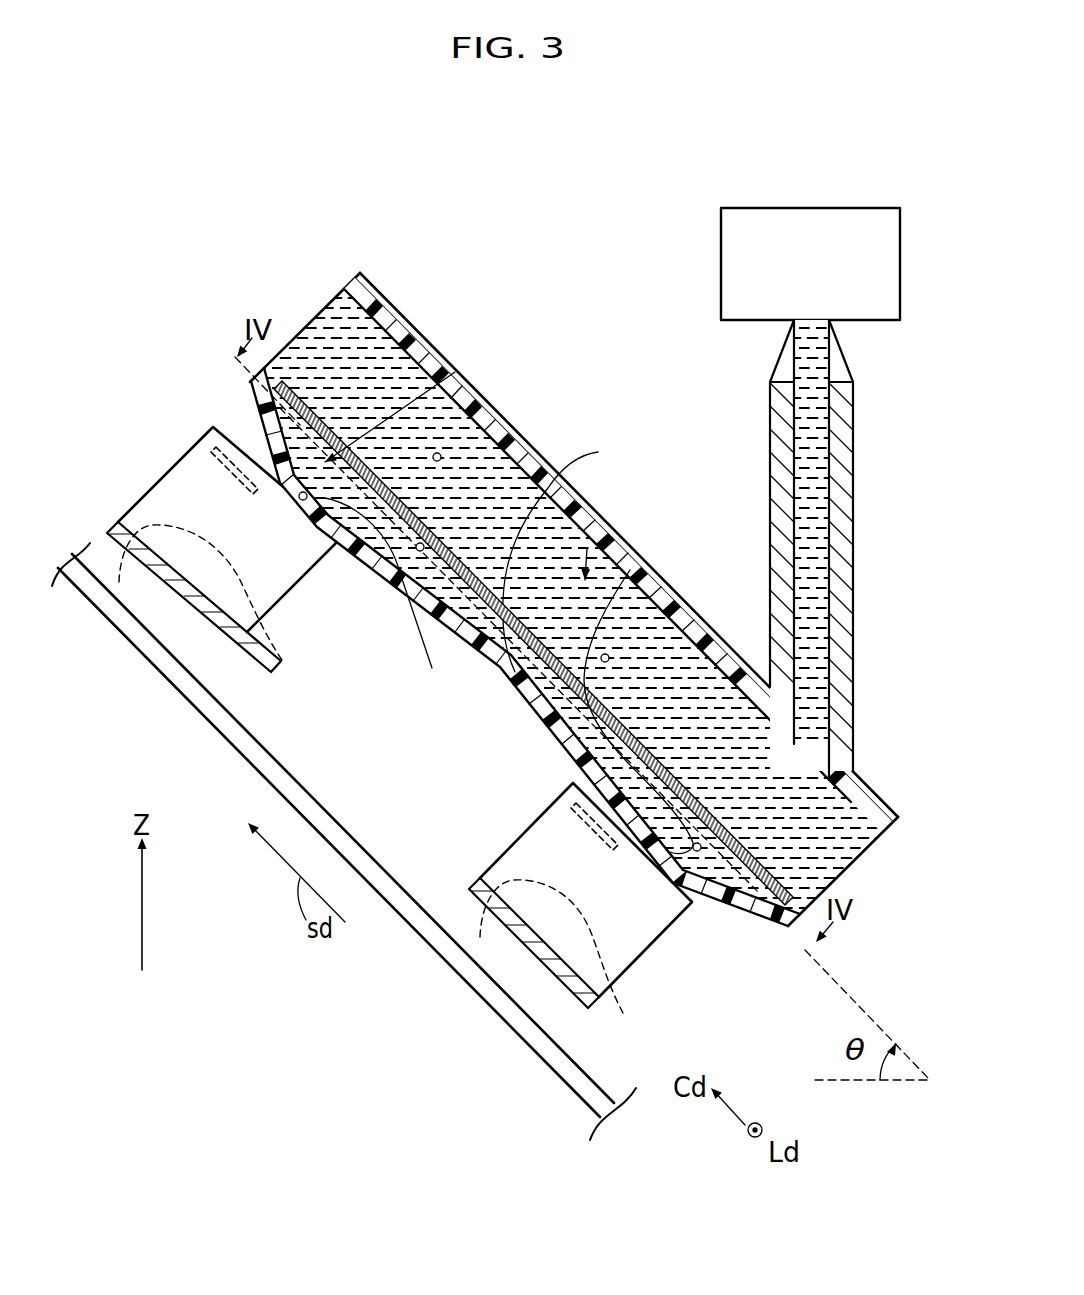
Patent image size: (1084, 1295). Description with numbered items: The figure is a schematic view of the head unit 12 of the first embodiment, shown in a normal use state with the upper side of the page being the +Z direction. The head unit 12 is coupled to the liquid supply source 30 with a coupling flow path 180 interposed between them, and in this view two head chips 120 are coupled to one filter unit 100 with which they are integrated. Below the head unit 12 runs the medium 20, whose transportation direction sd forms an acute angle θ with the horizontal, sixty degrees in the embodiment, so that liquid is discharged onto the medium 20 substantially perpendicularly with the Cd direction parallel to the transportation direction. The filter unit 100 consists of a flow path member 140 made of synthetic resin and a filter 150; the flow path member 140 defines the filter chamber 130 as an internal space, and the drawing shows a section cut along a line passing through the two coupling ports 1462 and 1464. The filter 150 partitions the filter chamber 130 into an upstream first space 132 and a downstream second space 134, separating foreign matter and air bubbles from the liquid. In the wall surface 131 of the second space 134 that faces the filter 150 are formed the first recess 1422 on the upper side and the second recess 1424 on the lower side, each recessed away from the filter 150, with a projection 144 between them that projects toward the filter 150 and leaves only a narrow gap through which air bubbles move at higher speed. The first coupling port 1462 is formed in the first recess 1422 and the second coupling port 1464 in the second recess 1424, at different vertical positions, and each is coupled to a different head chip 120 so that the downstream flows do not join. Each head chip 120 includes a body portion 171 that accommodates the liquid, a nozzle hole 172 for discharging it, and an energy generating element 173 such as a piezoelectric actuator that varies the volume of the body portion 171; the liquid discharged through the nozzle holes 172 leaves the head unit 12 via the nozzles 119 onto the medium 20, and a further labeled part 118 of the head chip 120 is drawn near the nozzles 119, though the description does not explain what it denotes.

The head unit 12 is at (197, 220).
The filter unit 100 is at (316, 265).
The flow path member 140 is at (305, 325).
The wall surface 131 is at (277, 410).
The stage 118 is at (118, 522).
The nozzle 119 is at (353, 765).
The head chip 120 is at (364, 607).
The body portion 171 is at (633, 967).
The nozzle hole 172 is at (394, 784).
The energy generating element 173 is at (660, 937).
The first recess 1422 is at (455, 372).
The second recess 1424 is at (840, 783).
The projection 144 is at (574, 552).
The first space 132 is at (605, 545).
The second space 134 is at (608, 578).
The filter chamber 130 is at (697, 483).
The filter 150 is at (632, 700).
The first coupling port 1462 is at (509, 676).
The second coupling port 1464 is at (597, 757).
The coupling flow path 180 is at (853, 515).
The liquid supply source 30 is at (720, 240).
The medium 20 is at (410, 920).